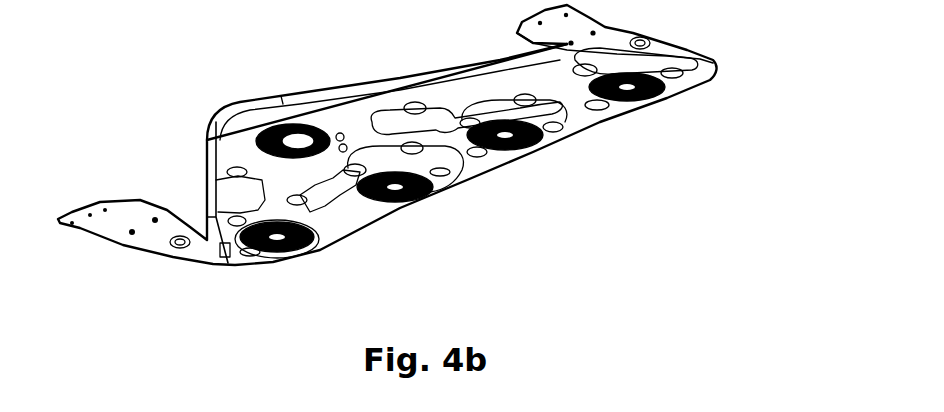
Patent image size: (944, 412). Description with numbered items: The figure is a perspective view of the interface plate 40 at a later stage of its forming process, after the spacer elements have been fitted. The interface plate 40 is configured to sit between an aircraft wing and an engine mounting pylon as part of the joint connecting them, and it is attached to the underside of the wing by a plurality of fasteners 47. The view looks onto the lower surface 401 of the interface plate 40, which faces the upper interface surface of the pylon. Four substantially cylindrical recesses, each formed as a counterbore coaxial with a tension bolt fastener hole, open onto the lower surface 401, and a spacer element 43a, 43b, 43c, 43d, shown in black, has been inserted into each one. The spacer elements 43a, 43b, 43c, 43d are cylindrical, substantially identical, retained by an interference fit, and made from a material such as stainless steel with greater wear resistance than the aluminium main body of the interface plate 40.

The interface plate 40 is at (246, 73).
The lower surface 401 is at (237, 150).
The fasteners 47 is at (223, 173).
The spacer element 43a is at (292, 250).
The spacer element 43b is at (427, 193).
The spacer element 43c is at (543, 143).
The spacer element 43d is at (663, 100).